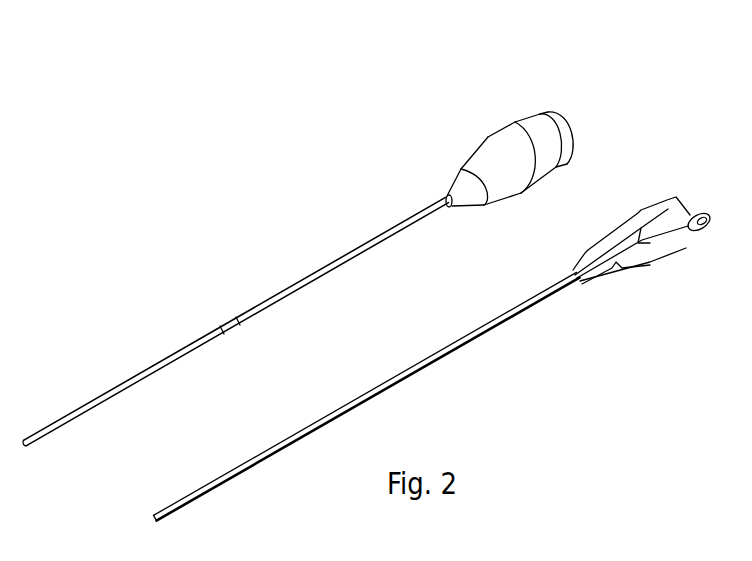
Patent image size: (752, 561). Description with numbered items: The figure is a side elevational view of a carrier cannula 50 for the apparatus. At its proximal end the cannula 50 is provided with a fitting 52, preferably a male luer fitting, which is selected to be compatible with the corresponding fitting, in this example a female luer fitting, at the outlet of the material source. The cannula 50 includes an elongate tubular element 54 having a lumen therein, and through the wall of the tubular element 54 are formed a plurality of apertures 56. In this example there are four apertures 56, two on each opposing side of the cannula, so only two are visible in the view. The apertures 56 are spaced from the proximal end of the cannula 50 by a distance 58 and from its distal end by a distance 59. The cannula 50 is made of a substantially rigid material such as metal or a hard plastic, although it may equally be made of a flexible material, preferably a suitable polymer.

The cannula 50 is at (203, 167).
The fitting 52 is at (510, 137).
The elongate tubular element 54 is at (383, 245).
The apertures 56 is at (221, 315).
The distance 58 is at (437, 193).
The distance 59 is at (240, 330).